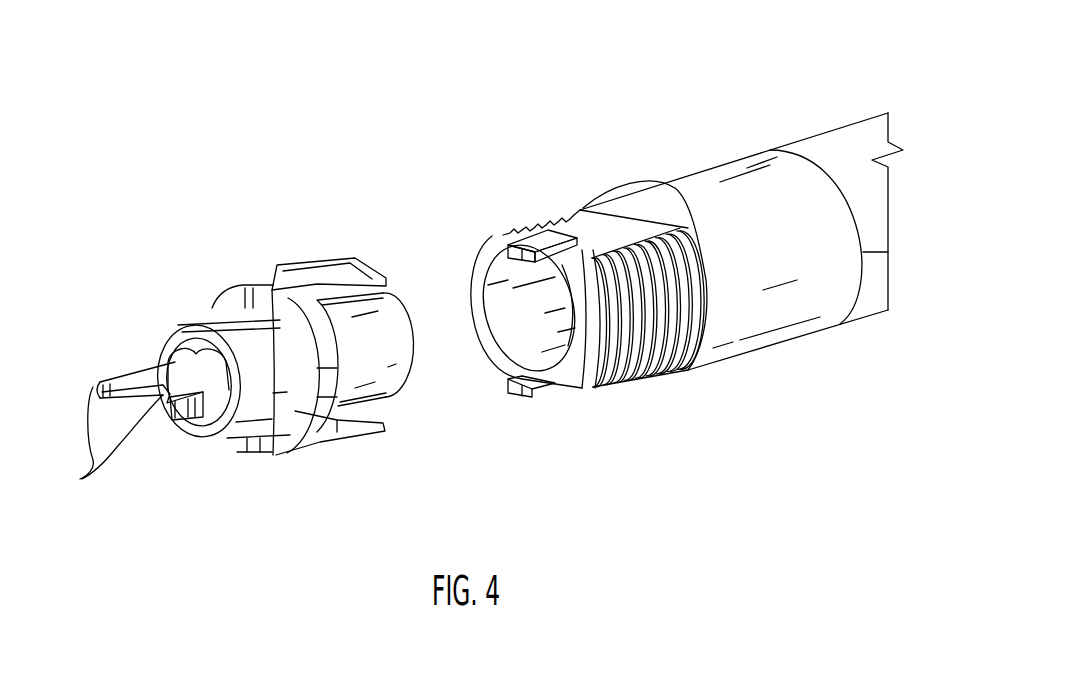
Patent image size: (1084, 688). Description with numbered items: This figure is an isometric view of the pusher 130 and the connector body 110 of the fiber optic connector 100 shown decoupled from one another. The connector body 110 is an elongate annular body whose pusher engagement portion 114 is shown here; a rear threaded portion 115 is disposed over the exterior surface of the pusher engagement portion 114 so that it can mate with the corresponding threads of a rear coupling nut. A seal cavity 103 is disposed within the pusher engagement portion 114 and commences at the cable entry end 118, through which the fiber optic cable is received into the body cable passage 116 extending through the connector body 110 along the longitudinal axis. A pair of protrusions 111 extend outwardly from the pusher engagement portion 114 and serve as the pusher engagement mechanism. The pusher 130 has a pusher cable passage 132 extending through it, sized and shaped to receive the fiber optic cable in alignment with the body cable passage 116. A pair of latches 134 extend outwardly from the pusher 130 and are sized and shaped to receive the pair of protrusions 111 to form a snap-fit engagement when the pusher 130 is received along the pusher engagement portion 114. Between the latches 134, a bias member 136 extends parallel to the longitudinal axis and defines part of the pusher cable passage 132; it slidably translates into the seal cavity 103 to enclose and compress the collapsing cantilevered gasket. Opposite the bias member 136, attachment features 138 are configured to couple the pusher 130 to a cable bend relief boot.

The fiber optic connector 100 is at (231, 80).
The pusher 130 is at (188, 222).
The pusher cable passage 132 is at (184, 373).
The pair of latches 134 is at (360, 271).
The bias member 136 is at (372, 336).
The attachment features 138 is at (122, 428).
The connector body 110 is at (832, 147).
The pusher engagement portion 114 is at (661, 95).
The rear threaded portion 115 is at (557, 192).
The pair of protrusions 111 is at (522, 240).
The cable entry end 118 is at (494, 386).
The seal cavity 103 is at (538, 327).
The body cable passage 116 is at (905, 223).